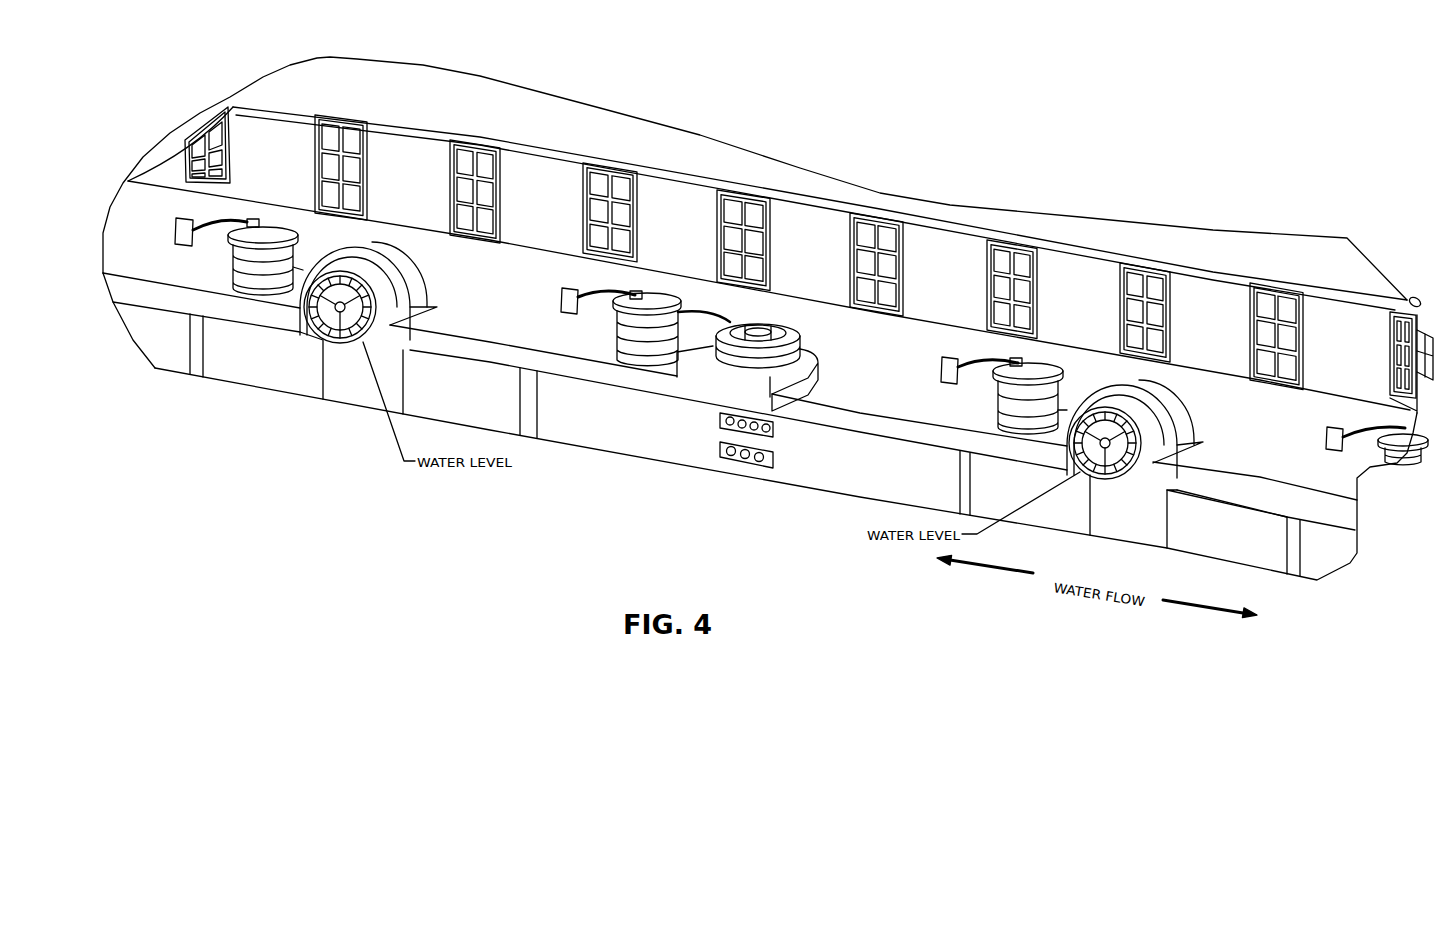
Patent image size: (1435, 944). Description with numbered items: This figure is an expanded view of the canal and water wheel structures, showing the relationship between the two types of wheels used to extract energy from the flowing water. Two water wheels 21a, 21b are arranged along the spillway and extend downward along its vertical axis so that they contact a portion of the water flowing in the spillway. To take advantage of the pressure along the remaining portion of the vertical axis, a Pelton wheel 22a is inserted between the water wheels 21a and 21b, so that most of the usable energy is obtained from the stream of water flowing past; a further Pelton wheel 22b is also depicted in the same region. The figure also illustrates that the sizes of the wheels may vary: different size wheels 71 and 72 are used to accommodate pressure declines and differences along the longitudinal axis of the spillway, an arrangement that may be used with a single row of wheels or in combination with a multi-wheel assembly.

The water wheel 21a is at (322, 325).
The water wheel 21b is at (1145, 441).
The Pelton wheel 22a is at (727, 427).
The water intake module 22b is at (753, 460).
The wheel 71 is at (232, 268).
The wheel 72 is at (800, 334).